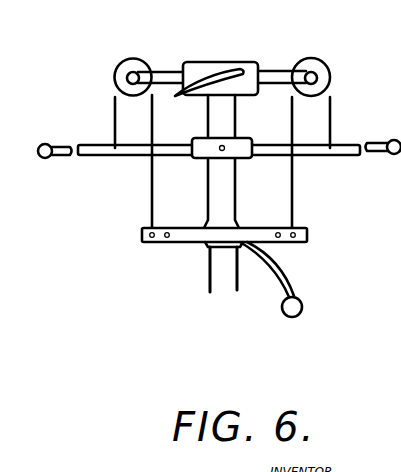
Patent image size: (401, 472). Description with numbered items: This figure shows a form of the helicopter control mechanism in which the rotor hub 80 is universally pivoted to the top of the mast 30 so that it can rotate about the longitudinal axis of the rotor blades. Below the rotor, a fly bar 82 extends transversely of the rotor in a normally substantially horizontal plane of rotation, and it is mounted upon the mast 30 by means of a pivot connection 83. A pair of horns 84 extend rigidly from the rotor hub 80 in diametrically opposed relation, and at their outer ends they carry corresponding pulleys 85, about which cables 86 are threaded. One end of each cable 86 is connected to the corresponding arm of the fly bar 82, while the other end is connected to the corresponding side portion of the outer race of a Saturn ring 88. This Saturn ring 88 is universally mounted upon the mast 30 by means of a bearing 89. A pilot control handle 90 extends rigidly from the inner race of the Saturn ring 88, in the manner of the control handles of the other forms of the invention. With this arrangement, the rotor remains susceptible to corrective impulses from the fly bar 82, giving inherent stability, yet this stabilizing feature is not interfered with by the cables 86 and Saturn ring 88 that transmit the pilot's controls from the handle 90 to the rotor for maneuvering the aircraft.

The mast 30 is at (214, 186).
The rotor hub 80 is at (215, 67).
The fly bar 82 is at (357, 152).
The pivot connection 83 is at (238, 147).
The horns 84 is at (167, 72).
The pulleys 85 is at (133, 64).
The cables 86 is at (115, 102).
The Saturn ring 88 is at (262, 232).
The bearing 89 is at (208, 243).
The pilot control handle 90 is at (291, 286).